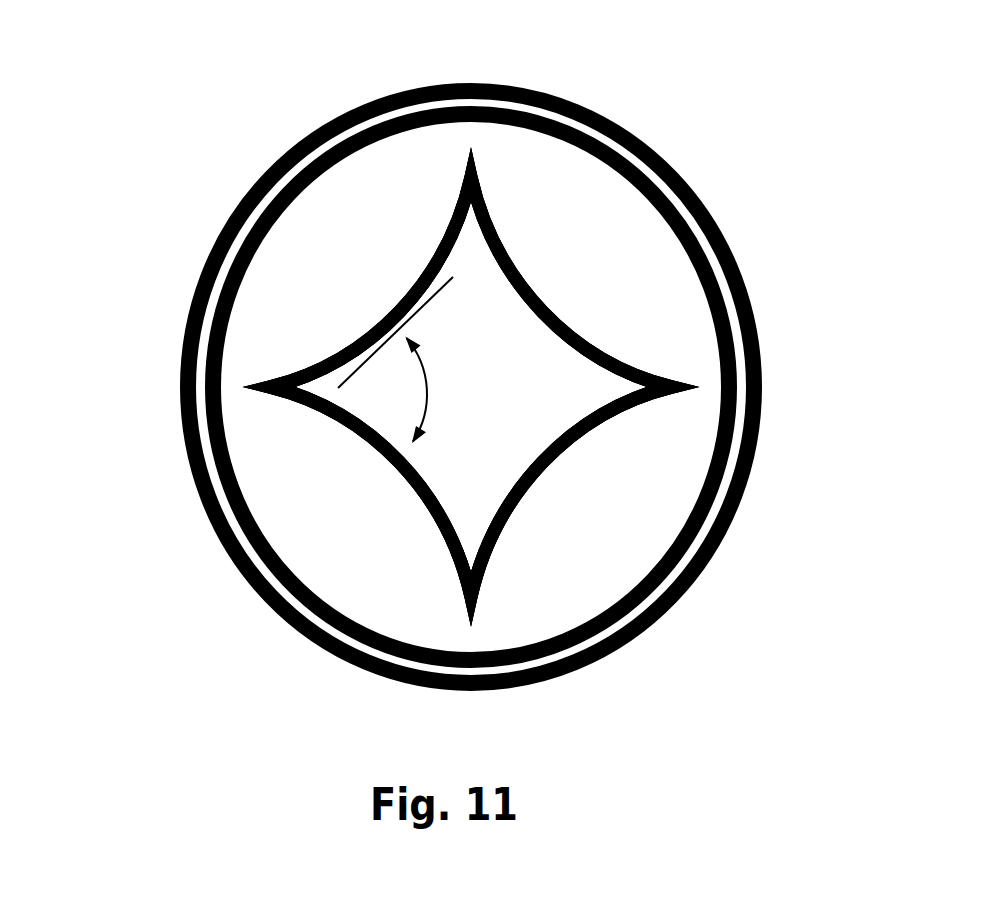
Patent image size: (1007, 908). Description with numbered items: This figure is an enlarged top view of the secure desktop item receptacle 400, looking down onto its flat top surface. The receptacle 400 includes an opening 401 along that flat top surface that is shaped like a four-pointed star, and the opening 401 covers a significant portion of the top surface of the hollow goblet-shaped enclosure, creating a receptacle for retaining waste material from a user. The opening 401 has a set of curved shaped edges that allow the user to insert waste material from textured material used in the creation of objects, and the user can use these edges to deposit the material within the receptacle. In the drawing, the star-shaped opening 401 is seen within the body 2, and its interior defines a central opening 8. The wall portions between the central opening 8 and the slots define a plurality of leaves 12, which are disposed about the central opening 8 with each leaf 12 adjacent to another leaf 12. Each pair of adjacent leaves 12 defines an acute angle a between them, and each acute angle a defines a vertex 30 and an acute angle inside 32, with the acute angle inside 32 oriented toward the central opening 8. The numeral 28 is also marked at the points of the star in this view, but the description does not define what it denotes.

The body 2 is at (606, 219).
The central opening 8 is at (520, 395).
The leaves 12 is at (377, 293).
The apex 28 is at (268, 390).
The vertex 30 is at (338, 388).
The acute angle inside 32 is at (383, 382).
The secure desktop item receptacle 400 is at (652, 145).
The opening 401 is at (507, 333).
The acute angle a is at (428, 391).